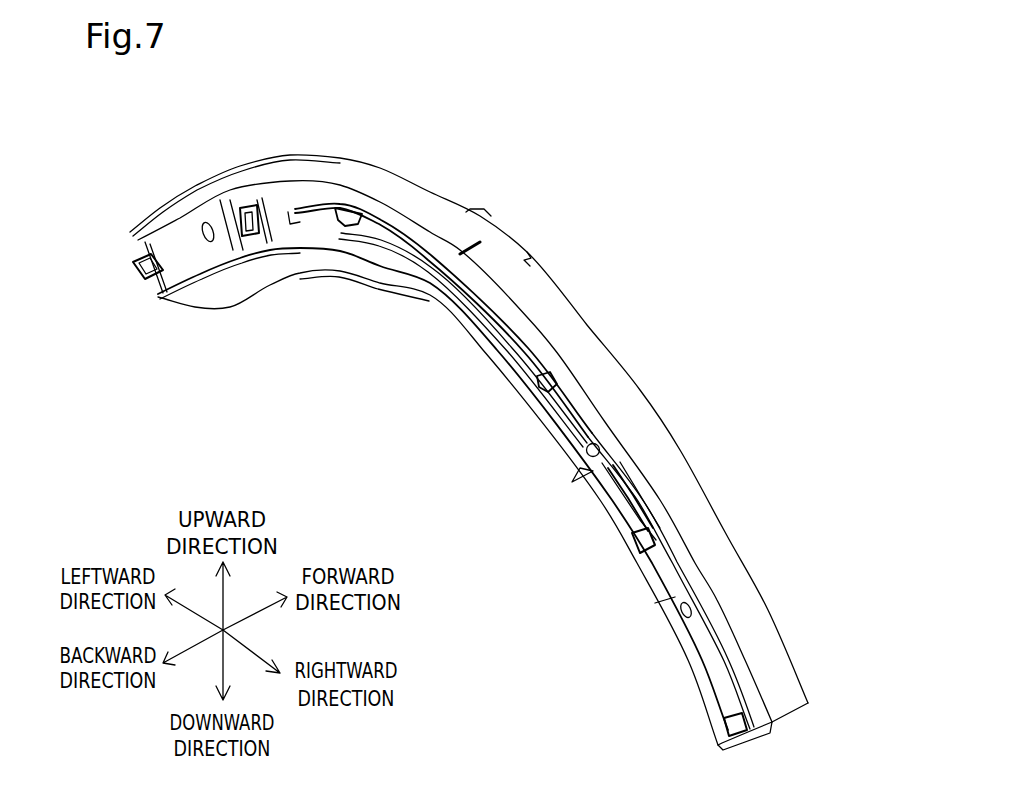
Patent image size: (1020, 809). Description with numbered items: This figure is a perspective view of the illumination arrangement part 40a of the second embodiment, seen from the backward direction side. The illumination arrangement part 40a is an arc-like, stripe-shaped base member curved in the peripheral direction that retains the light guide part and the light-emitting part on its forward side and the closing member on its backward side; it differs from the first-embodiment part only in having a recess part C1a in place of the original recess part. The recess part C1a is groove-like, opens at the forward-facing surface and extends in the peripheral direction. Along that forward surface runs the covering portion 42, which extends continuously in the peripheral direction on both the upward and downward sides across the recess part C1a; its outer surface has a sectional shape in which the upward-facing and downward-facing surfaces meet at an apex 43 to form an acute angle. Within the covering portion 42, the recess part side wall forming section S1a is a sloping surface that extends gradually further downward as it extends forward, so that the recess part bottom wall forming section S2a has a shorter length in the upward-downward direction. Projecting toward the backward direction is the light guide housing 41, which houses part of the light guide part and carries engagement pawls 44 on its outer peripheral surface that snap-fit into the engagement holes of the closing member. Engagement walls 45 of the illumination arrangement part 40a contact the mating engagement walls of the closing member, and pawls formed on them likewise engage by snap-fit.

The illumination arrangement part 40a is at (728, 163).
The light guide housing 41 is at (482, 320).
The covering portion 42 is at (215, 281).
The apex 43 is at (470, 347).
The engagement pawl 44 is at (350, 213).
The engagement wall 45 is at (242, 212).
The recess part side wall forming section S1a is at (273, 202).
The recess part bottom wall forming section S2a is at (613, 428).
The recess part C1a is at (590, 473).